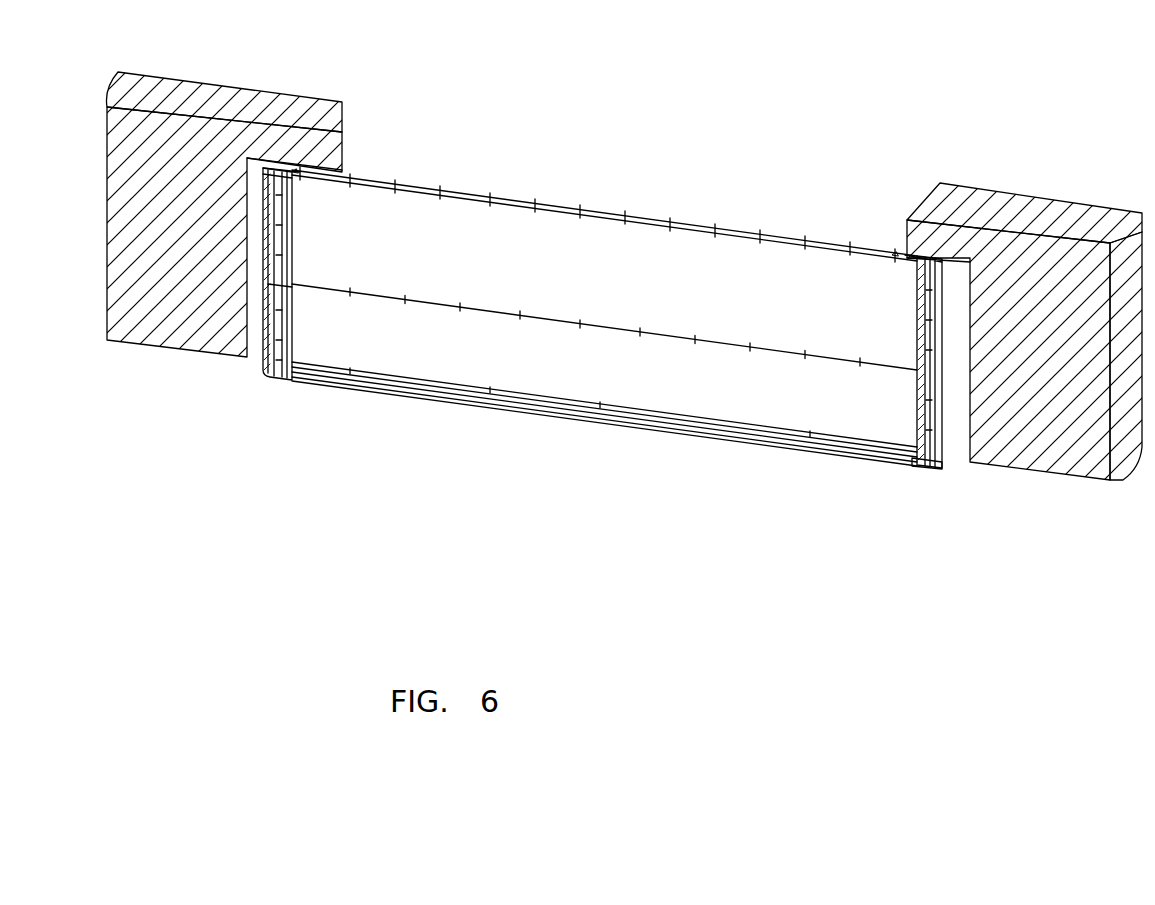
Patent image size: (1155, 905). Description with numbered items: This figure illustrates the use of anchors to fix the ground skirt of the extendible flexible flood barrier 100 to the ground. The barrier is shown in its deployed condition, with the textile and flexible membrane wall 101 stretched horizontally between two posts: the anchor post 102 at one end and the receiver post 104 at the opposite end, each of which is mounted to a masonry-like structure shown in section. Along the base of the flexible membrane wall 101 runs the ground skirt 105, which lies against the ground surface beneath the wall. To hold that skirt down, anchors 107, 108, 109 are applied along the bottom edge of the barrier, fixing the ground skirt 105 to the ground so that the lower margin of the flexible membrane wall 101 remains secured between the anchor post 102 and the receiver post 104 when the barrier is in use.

The extendible flexible flood barrier 100 is at (624, 295).
The flexible membrane wall 101 is at (422, 246).
The anchor post 102 is at (295, 204).
The receiver post 104 is at (916, 332).
The ground skirt 105 is at (917, 470).
The anchor 107 is at (348, 388).
The anchor 108 is at (490, 403).
The anchor 109 is at (598, 422).